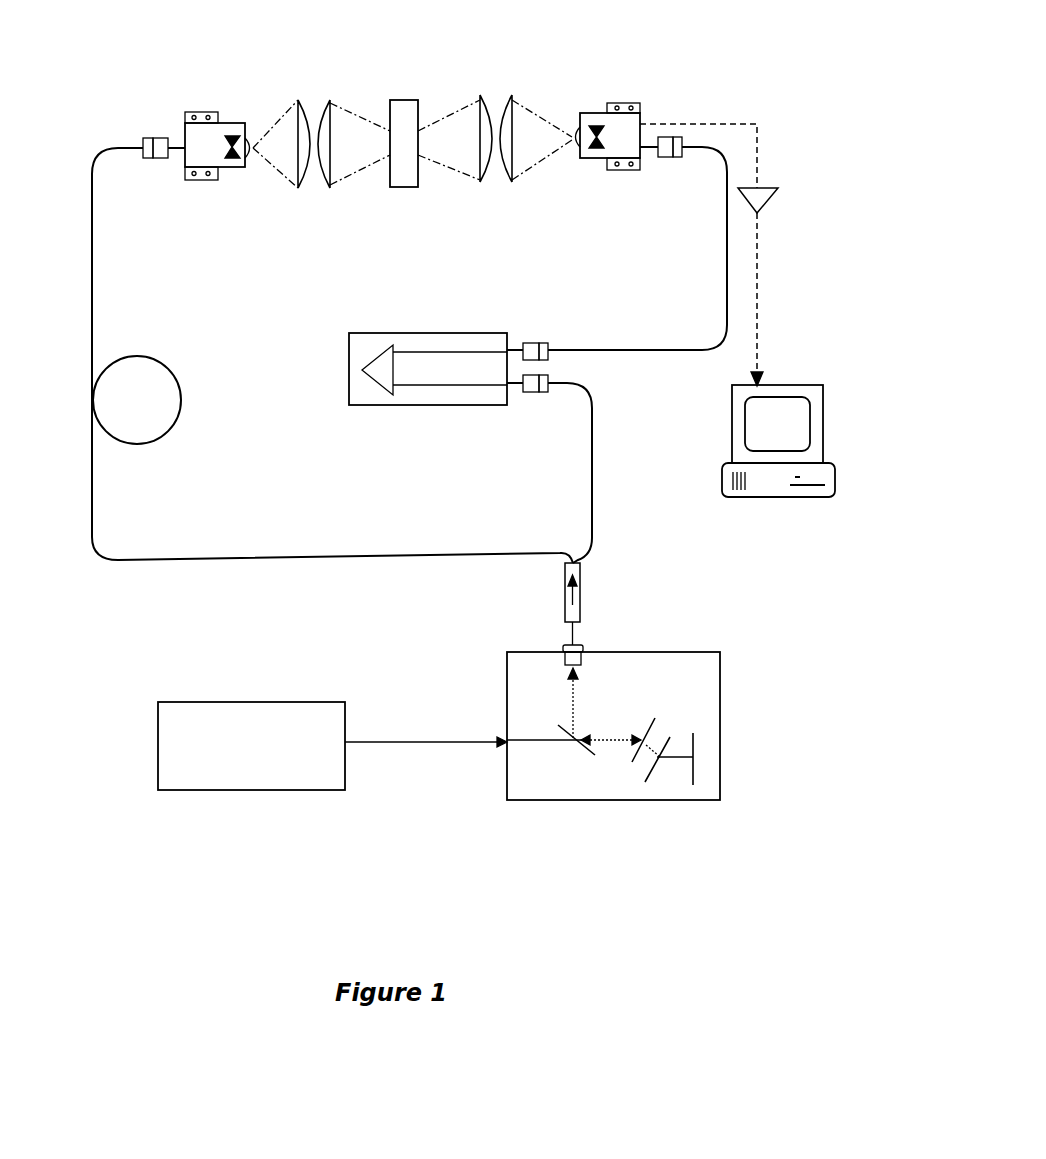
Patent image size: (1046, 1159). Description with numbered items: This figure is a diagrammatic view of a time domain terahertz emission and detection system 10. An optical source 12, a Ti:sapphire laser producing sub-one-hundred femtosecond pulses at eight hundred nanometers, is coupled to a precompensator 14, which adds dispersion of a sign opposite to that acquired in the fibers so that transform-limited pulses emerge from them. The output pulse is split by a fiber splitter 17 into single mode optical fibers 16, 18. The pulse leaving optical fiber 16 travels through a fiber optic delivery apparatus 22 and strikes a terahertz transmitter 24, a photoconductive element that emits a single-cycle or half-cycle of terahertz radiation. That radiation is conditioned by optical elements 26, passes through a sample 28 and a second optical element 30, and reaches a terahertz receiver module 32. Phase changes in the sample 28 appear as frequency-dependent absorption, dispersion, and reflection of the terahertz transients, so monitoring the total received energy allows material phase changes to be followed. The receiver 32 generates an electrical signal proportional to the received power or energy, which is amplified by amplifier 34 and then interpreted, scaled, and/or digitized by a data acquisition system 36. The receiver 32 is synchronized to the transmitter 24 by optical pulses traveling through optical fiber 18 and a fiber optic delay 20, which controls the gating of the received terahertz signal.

The terahertz electromagnetic radiation emission and detection system 10 is at (818, 73).
The optical source 12 is at (165, 790).
The precompensator 14 is at (718, 800).
The single mode optical fiber 16 is at (395, 557).
The fiber splitter 17 is at (580, 605).
The single mode optical fiber 18 is at (593, 470).
The fiber optic delay 20 is at (480, 330).
The fiber optic delivery apparatus 22 is at (92, 418).
The terahertz transmitter 24 is at (223, 123).
The optical elements 26 is at (303, 187).
The sample 28 is at (400, 188).
The second optical element 30 is at (498, 182).
The terahertz receiver module 32 is at (642, 113).
The amplifier 34 is at (778, 199).
The data acquisition system 36 is at (824, 440).